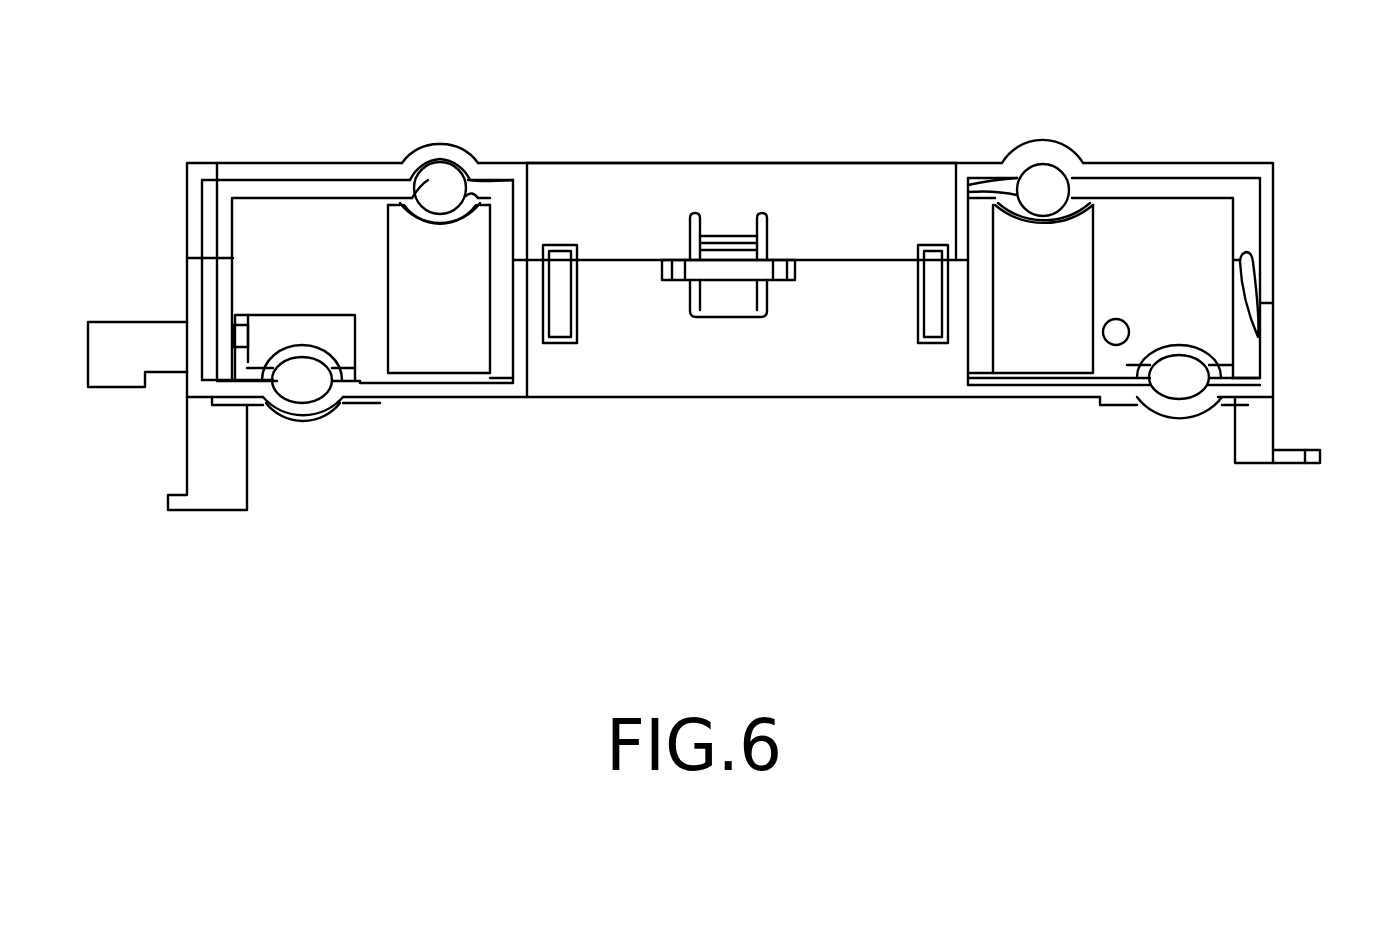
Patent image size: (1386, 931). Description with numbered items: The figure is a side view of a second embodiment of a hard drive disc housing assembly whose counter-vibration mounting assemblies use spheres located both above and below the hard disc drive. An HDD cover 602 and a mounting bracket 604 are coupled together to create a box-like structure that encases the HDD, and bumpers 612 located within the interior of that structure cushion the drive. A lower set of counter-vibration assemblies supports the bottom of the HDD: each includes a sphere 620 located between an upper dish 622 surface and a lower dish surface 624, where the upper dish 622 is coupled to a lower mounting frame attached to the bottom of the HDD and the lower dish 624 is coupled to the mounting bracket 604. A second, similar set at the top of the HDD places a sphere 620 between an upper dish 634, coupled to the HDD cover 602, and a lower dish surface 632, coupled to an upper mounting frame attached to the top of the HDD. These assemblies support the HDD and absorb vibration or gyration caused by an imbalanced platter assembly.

The HDD cover 602 is at (687, 182).
The mounting bracket 604 is at (810, 387).
The bumper 612 is at (1248, 273).
The sphere 620 is at (442, 182).
The upper dish 622 is at (327, 380).
The lower dish surface 624 is at (307, 408).
The lower dish surface 632 is at (404, 193).
The upper dish 634 is at (460, 162).